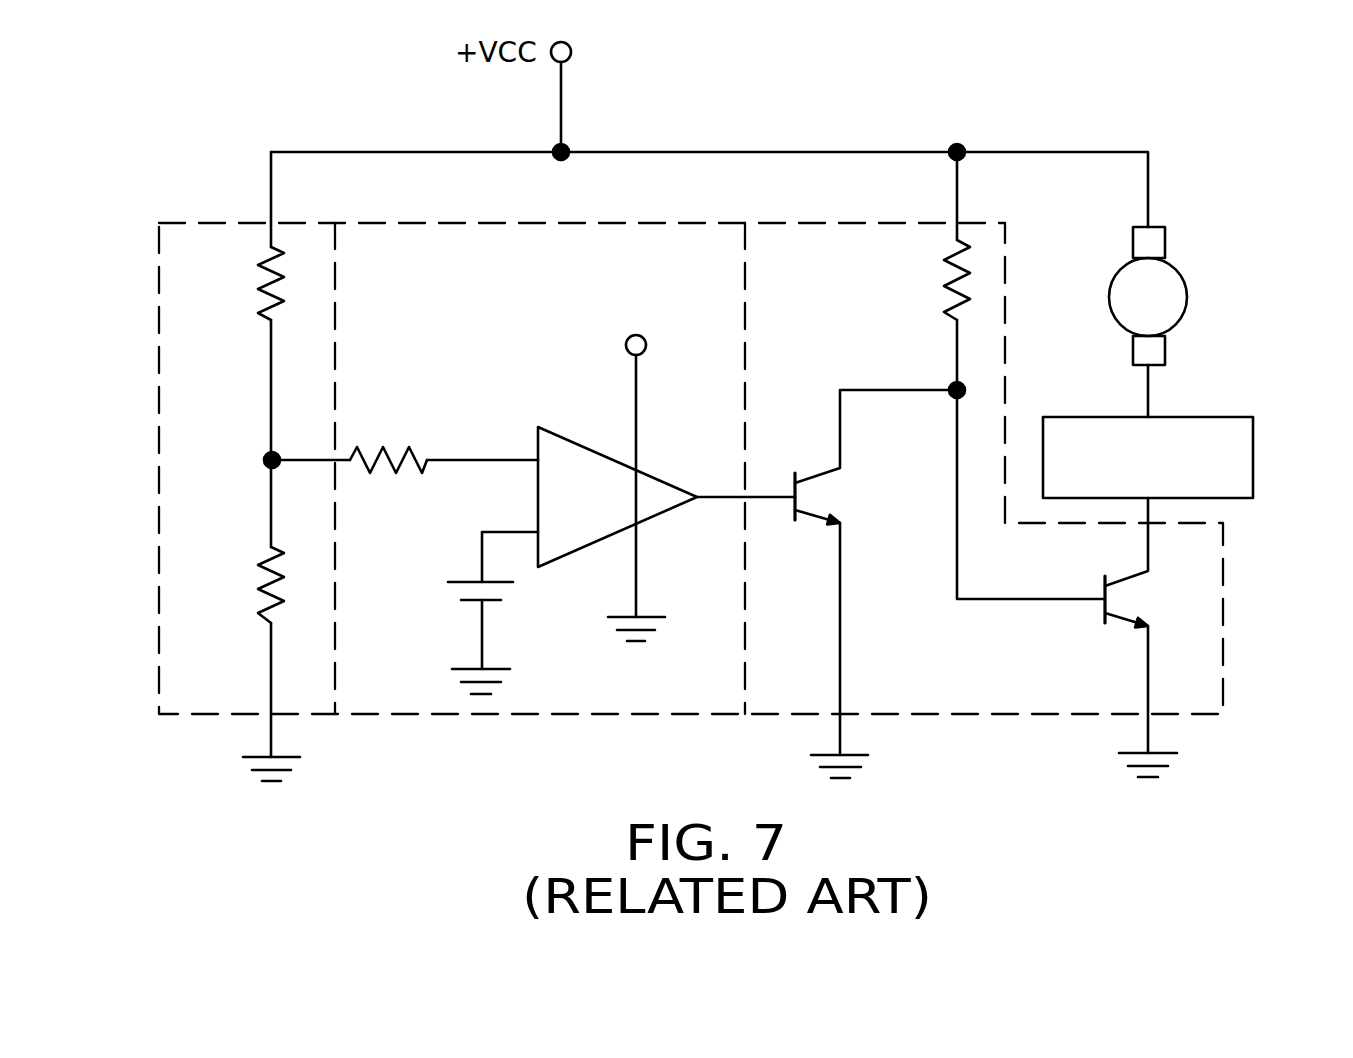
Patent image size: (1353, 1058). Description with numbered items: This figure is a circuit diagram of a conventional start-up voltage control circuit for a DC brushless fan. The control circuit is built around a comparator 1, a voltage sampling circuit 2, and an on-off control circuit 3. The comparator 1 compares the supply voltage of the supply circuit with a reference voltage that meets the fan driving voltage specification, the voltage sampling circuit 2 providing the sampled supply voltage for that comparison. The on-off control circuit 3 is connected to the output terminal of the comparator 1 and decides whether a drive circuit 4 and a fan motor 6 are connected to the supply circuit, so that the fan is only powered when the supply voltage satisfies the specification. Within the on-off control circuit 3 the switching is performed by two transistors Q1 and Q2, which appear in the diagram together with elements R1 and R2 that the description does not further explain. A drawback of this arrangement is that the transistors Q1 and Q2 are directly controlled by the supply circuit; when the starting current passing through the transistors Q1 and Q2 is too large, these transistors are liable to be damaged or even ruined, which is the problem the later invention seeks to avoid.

The comparator 1 is at (640, 502).
The voltage sampling circuit 2 is at (204, 466).
The on-off control circuit 3 is at (951, 432).
The drive circuit 4 is at (1225, 435).
The fan motor 6 is at (1167, 293).
The resistor R1 is at (231, 282).
The resistor R2 is at (233, 597).
The transistor Q1 is at (867, 497).
The transistor Q2 is at (1187, 598).